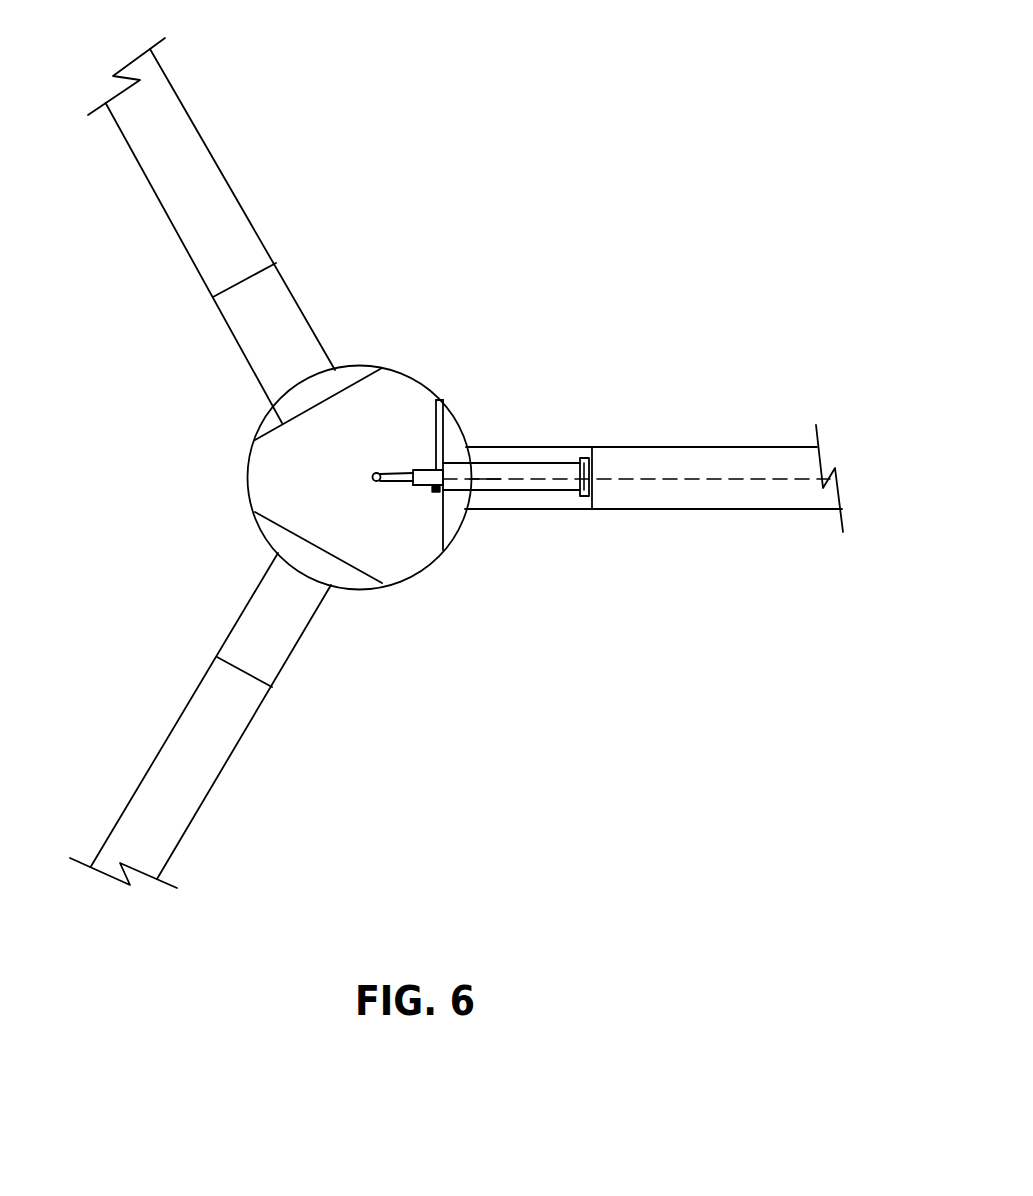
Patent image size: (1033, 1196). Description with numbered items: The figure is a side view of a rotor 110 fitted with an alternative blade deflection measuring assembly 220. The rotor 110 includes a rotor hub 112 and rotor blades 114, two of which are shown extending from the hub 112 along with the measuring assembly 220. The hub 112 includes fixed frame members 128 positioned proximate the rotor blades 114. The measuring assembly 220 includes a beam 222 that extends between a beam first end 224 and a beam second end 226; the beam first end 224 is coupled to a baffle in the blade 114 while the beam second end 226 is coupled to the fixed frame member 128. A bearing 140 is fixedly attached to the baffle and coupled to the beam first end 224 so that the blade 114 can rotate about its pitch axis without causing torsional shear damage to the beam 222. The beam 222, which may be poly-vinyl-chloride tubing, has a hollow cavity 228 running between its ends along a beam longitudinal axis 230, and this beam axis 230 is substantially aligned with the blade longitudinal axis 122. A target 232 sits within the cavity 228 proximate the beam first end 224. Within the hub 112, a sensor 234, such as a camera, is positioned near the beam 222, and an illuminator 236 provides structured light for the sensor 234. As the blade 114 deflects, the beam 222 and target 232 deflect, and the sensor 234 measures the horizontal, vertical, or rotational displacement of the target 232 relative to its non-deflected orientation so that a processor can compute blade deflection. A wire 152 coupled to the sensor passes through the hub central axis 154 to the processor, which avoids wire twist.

The rotor 110 is at (613, 124).
The rotor hub 112 is at (272, 487).
The rotor blades 114 is at (168, 187).
The blade longitudinal axis 122 is at (727, 480).
The fixed frame members 128 is at (273, 408).
The bearing 140 is at (590, 492).
The wire 152 is at (387, 483).
The hub central axis 154 is at (374, 472).
The blade deflection measuring assembly 220 is at (525, 660).
The beam 222 is at (521, 447).
The beam first end 224 is at (573, 447).
The beam second end 226 is at (439, 400).
The hollow cavity 228 is at (518, 487).
The beam longitudinal axis 230 is at (493, 480).
The target 232 is at (583, 497).
The sensor 234 is at (414, 487).
The illuminator 236 is at (433, 492).